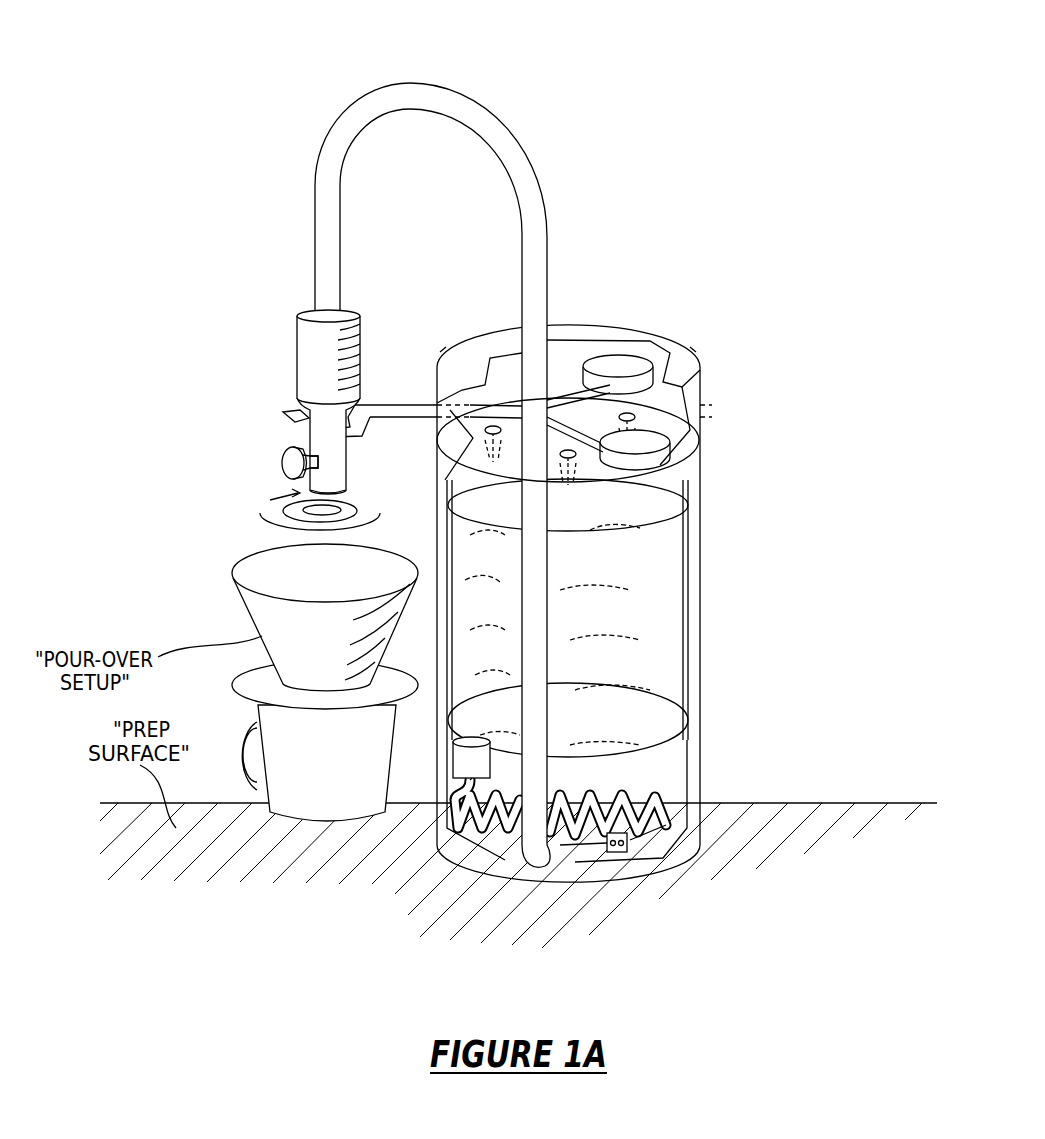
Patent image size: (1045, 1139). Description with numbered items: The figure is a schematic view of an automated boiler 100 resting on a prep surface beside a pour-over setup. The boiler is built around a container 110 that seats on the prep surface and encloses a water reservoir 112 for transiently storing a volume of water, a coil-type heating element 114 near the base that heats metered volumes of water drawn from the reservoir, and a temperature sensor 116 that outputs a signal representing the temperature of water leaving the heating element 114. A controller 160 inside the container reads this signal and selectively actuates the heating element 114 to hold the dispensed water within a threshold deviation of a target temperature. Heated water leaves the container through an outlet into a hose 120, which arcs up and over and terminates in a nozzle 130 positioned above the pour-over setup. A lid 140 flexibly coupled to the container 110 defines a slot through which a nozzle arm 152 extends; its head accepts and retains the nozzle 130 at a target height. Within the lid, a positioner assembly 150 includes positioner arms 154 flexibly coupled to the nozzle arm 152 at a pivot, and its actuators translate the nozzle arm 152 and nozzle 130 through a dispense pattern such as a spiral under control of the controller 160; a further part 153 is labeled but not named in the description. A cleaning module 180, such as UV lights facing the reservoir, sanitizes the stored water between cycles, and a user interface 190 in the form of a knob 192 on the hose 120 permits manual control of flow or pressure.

The automated boiler 100 is at (750, 80).
The container 110 is at (702, 612).
The water reservoir 112 is at (640, 668).
The heating element 114 is at (640, 800).
The temperature sensor 116 is at (615, 852).
The hose 120 is at (410, 83).
The nozzle 130 is at (296, 362).
The lid 140 is at (702, 402).
The positioner assembly 150 is at (594, 361).
The nozzle arm 152 is at (370, 405).
The support arm 153 is at (283, 412).
The positioner arms 154 is at (697, 428).
The controller 160 is at (460, 758).
The cleaning module 180 is at (655, 480).
The user interface 190 is at (280, 472).
The knob 192 is at (250, 473).